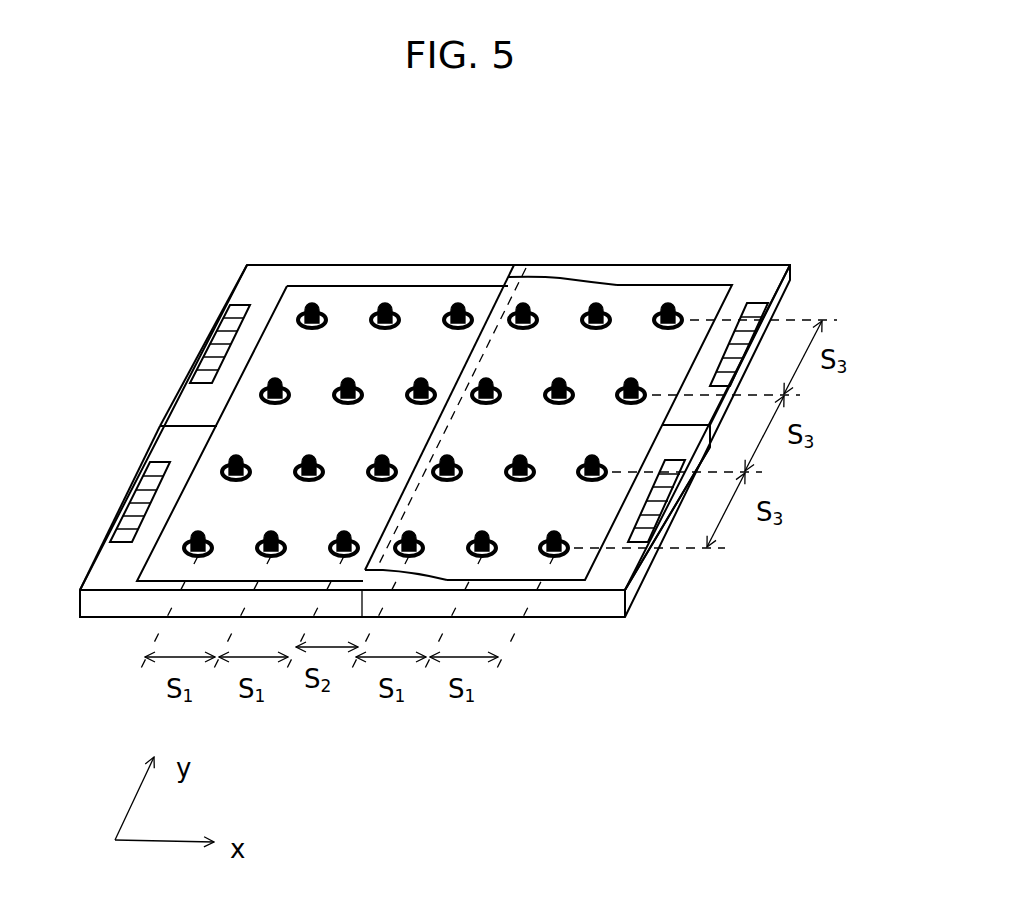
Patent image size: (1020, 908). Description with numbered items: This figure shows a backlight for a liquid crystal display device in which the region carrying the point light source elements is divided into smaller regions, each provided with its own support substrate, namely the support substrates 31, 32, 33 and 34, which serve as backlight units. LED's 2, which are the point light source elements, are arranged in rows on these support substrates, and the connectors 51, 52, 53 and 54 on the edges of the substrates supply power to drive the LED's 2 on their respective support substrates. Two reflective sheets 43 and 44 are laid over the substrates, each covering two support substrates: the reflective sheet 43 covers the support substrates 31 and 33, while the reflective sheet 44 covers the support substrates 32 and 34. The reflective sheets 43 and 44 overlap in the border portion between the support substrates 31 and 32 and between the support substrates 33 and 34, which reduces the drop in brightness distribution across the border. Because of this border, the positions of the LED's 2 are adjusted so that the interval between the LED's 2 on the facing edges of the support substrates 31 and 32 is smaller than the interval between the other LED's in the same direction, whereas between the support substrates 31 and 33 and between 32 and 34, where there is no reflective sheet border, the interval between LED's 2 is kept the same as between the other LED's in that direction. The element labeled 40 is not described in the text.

The LED 2 is at (386, 300).
The probe holding hole 40 is at (300, 306).
The reflective sheet 43 is at (482, 303).
The reflective sheet 44 is at (640, 307).
The support substrate 31 is at (192, 408).
The support substrate 32 is at (758, 288).
The support substrate 33 is at (113, 567).
The support substrate 34 is at (613, 567).
The connector 51 is at (221, 322).
The connector 52 is at (763, 310).
The connector 53 is at (133, 507).
The connector 54 is at (660, 520).